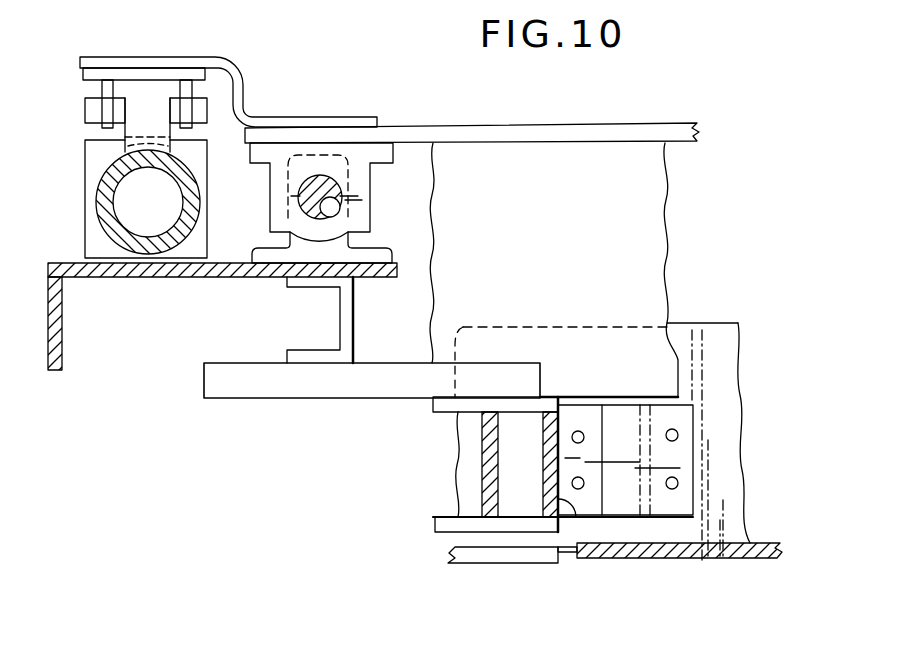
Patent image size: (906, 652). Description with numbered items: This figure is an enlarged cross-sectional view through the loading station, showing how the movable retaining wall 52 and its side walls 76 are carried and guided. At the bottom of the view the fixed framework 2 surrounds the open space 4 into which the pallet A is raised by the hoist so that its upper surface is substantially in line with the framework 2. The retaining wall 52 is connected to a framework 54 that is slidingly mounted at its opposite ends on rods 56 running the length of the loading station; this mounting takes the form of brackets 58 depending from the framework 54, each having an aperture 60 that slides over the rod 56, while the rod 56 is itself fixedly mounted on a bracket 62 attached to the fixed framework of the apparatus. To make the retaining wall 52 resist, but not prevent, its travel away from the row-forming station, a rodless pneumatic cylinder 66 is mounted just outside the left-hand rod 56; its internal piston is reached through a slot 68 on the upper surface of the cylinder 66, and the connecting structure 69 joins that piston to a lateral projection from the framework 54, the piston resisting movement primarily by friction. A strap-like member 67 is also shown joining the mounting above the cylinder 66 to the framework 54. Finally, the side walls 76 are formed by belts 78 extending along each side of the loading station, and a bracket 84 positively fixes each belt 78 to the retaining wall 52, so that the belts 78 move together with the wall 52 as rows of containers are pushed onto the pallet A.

The framework 2 is at (507, 550).
The open space 4 is at (562, 557).
The retaining wall 52 is at (698, 347).
The framework 54 is at (462, 132).
The rod 56 is at (322, 175).
The bracket 58 is at (362, 186).
The aperture 60 is at (372, 200).
The bracket 62 is at (290, 255).
The rodless pneumatic cylinder 66 is at (158, 248).
The mounting strap 67 is at (245, 76).
The slot 68 is at (173, 152).
The structure 69 is at (147, 112).
The side wall 76 is at (560, 438).
The belt 78 is at (563, 502).
The bracket 84 is at (677, 462).
The pallet A is at (732, 558).